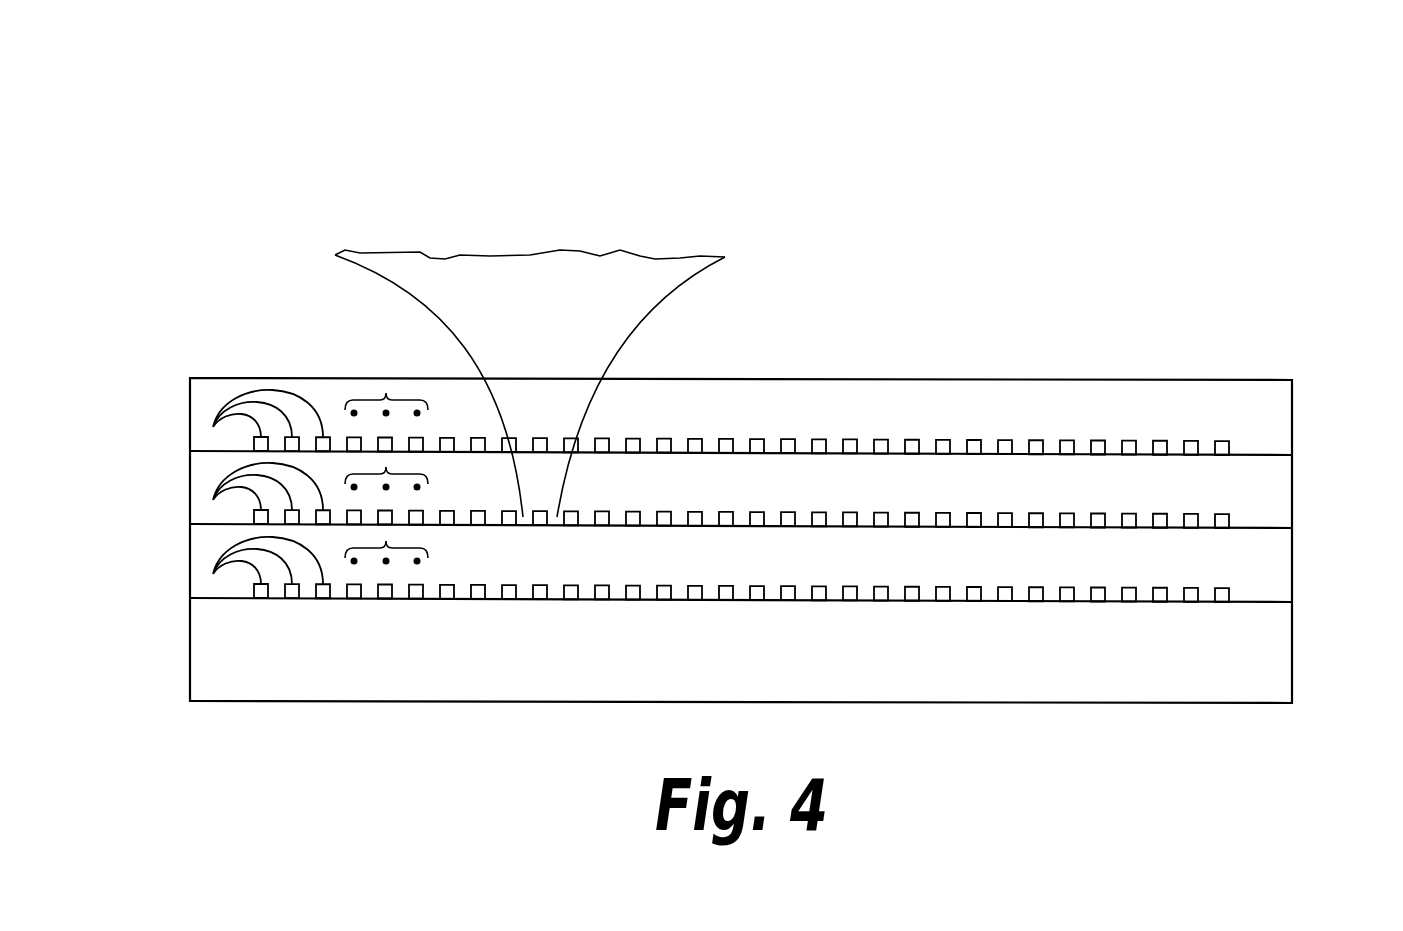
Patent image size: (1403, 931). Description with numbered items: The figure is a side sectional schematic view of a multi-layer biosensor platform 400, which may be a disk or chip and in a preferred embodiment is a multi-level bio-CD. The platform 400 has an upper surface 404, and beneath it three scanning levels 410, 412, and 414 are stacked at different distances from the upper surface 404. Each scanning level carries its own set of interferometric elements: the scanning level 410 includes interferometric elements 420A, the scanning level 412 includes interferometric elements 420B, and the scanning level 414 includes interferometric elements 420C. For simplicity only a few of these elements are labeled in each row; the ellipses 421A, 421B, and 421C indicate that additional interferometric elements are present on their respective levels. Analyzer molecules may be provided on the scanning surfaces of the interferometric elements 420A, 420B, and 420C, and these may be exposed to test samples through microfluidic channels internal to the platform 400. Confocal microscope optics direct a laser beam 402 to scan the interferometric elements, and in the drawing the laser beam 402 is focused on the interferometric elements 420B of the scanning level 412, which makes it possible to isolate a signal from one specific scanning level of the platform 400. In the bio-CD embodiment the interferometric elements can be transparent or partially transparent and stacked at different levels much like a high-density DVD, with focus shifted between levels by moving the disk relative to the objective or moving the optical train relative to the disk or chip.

The multi-layer biosensor platform 400 is at (1142, 138).
The laser beam 402 is at (370, 250).
The upper surface 404 is at (1212, 378).
The scanning level 410 is at (1257, 455).
The scanning level 412 is at (1265, 528).
The scanning level 414 is at (1250, 603).
The interferometric elements 420A is at (213, 427).
The interferometric elements 420B is at (213, 500).
The interferometric elements 420C is at (213, 574).
The ellipses 421A is at (387, 393).
The ellipses 421B is at (386, 467).
The ellipses 421C is at (386, 541).